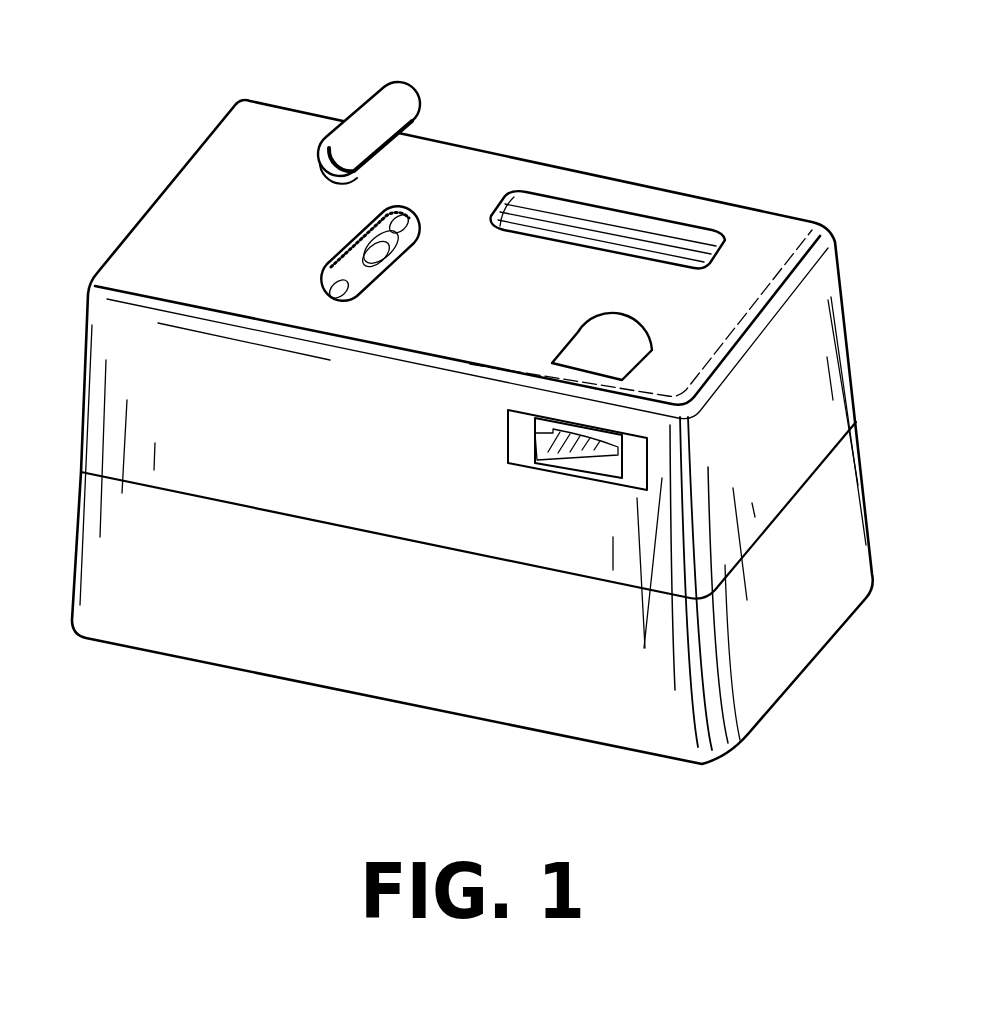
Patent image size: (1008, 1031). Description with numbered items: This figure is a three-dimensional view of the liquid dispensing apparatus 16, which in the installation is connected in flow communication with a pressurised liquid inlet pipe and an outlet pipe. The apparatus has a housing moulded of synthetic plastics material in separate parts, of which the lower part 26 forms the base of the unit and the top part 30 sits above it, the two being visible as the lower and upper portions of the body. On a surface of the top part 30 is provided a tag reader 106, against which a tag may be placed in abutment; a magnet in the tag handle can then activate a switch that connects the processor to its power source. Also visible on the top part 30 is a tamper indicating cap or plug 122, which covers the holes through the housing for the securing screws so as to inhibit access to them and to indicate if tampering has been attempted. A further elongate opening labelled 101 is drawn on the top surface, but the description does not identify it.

The liquid dispensing apparatus 16 is at (133, 172).
The tamper indicating cap or plug 122 is at (421, 92).
The slot 101 is at (717, 210).
The top part 30 is at (845, 318).
The tag reader 106 is at (518, 450).
The lower part 26 is at (804, 673).